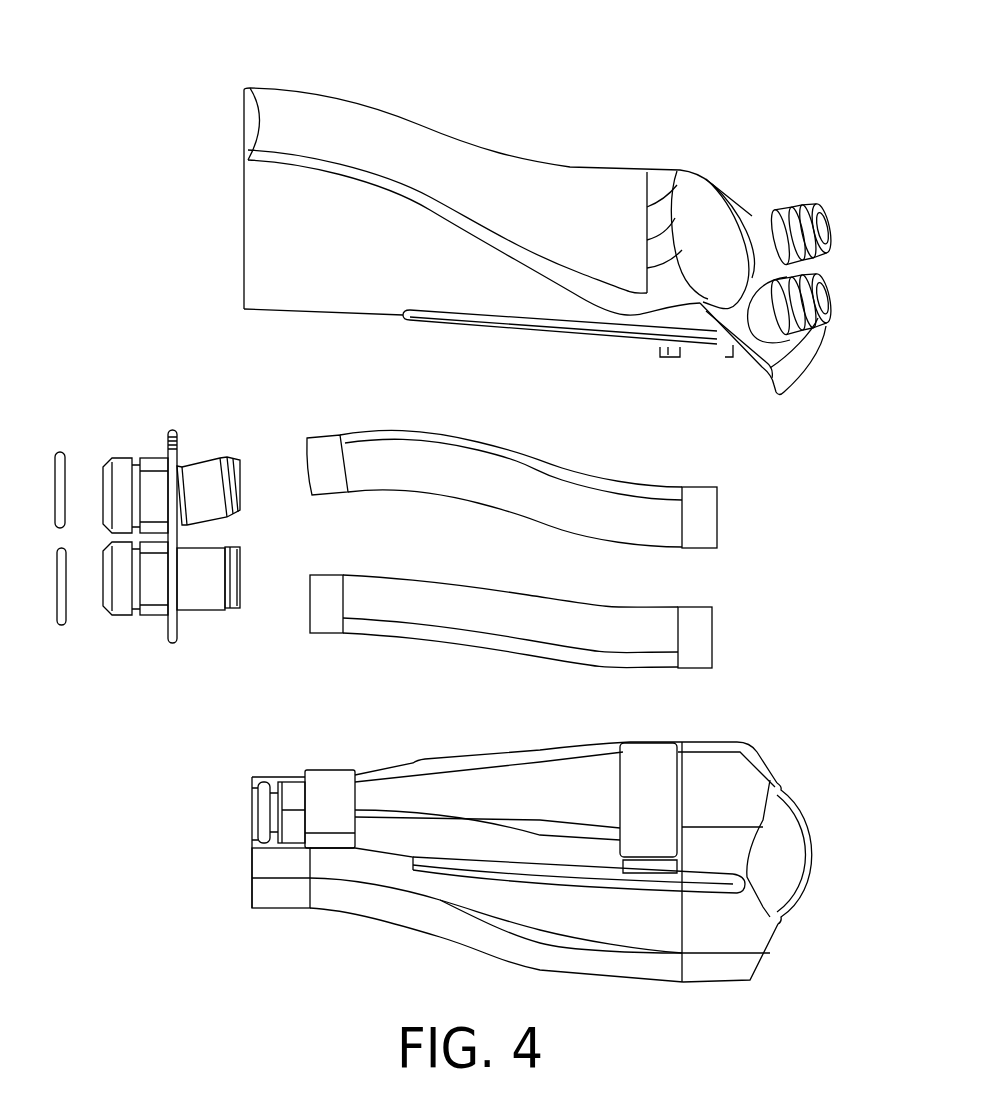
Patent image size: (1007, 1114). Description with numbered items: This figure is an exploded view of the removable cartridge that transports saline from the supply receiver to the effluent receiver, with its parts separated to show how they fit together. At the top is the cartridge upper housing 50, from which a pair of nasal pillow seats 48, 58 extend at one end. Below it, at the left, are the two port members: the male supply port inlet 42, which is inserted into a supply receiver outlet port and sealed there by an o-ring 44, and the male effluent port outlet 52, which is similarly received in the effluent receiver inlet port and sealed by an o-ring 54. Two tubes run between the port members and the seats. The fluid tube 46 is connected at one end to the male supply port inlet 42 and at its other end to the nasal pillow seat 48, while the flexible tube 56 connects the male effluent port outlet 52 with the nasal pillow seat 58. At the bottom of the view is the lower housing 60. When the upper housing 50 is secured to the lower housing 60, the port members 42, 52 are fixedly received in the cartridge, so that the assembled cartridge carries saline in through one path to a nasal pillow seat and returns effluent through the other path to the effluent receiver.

The male supply port inlet 42 is at (150, 460).
The o-ring 44 is at (60, 448).
The fluid tube 46 is at (453, 487).
The nasal pillow seat 48 is at (791, 212).
The cartridge upper housing 50 is at (502, 119).
The male effluent port outlet 52 is at (147, 615).
The o-ring 54 is at (62, 627).
The flexible tube 56 is at (475, 623).
The nasal pillow seat 58 is at (823, 314).
The lower housing 60 is at (640, 963).